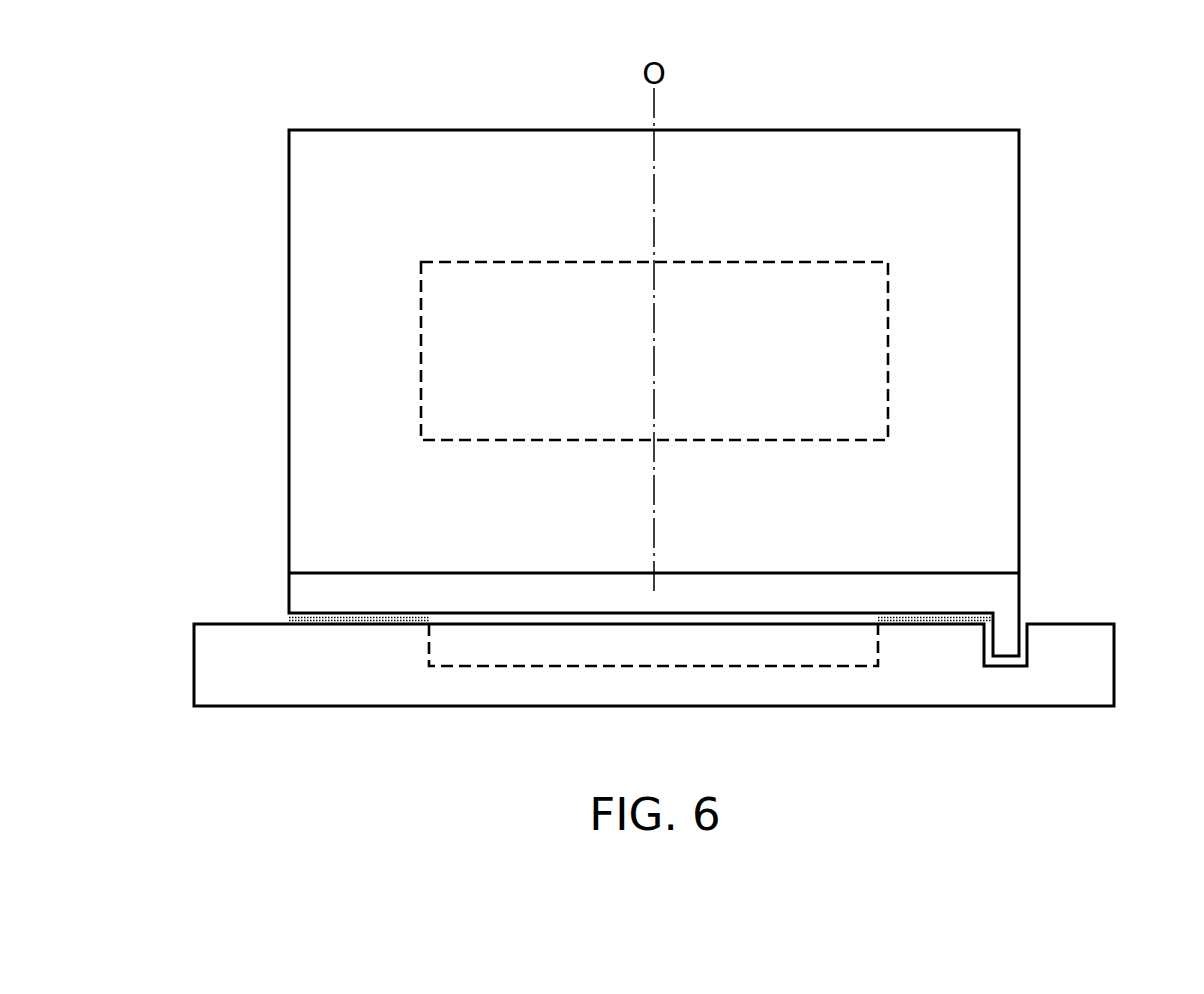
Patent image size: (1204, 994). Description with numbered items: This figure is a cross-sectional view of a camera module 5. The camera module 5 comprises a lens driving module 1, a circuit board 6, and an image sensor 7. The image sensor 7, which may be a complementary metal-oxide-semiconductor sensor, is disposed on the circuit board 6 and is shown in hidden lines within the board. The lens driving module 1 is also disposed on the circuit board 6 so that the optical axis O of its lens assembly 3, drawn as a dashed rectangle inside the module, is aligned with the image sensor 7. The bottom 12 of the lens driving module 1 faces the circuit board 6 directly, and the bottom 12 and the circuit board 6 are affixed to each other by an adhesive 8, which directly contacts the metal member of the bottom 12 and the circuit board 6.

The lens driving module 1 is at (1033, 259).
The lens assembly 3 is at (889, 351).
The camera module 5 is at (234, 106).
The circuit board 6 is at (1074, 665).
The image sensor 7 is at (657, 640).
The adhesive 8 is at (362, 624).
The bottom 12 is at (993, 596).